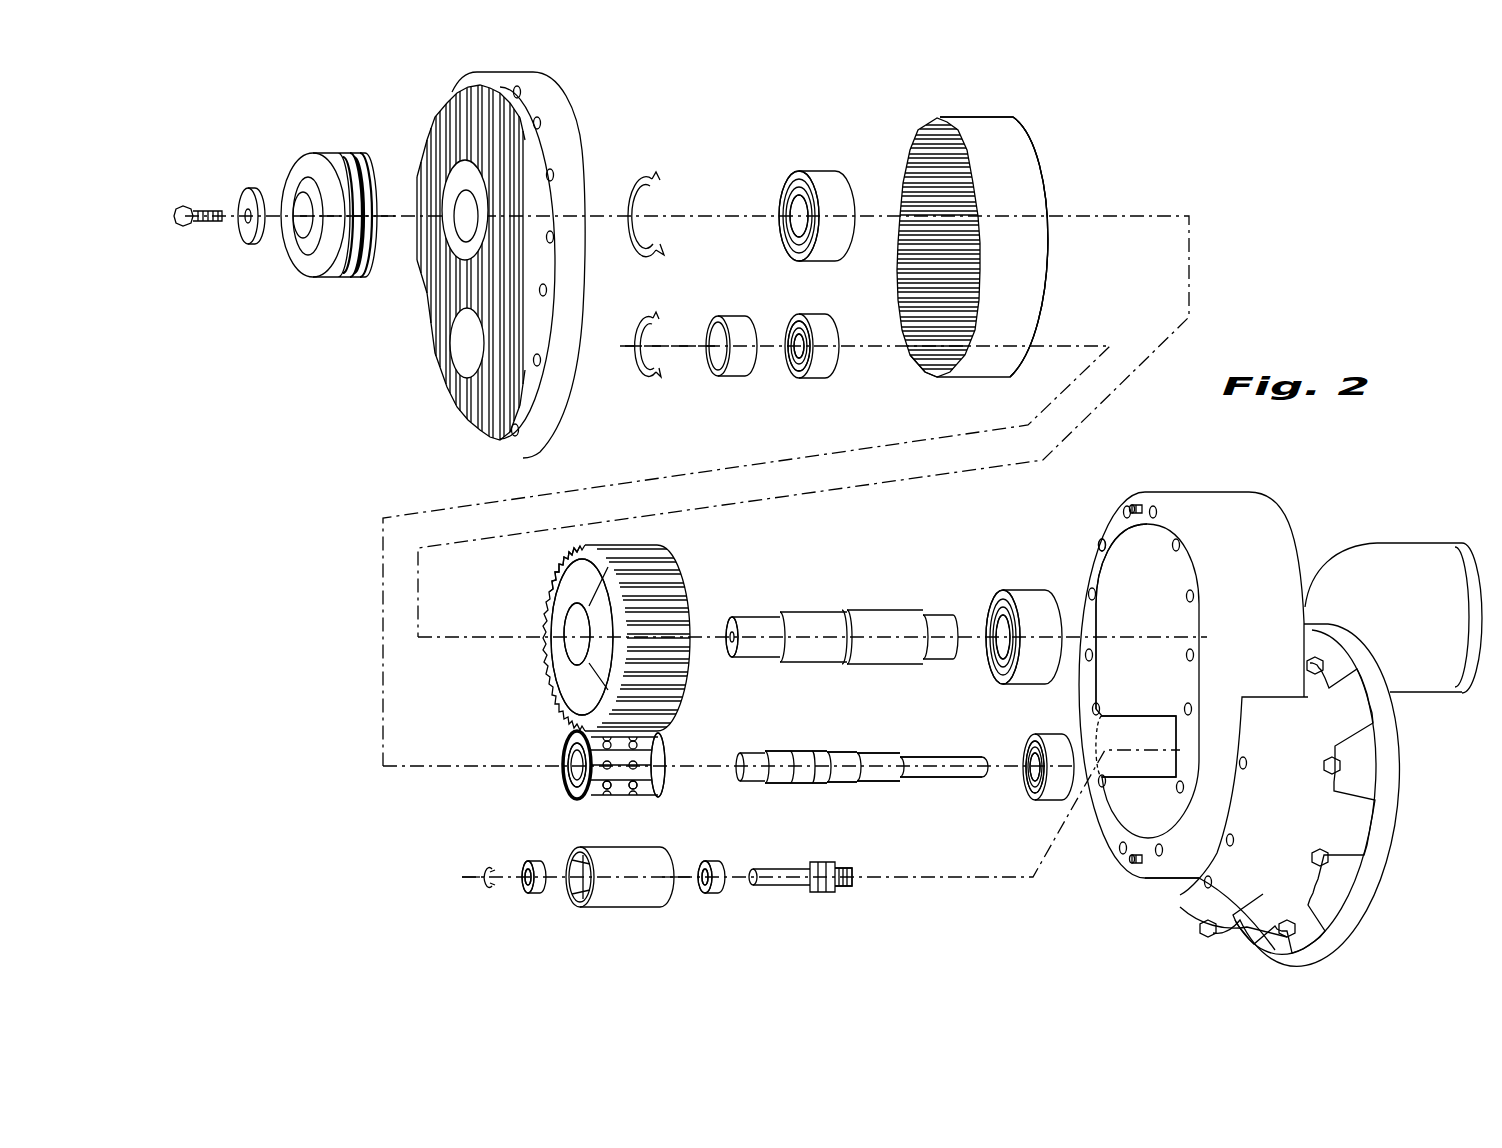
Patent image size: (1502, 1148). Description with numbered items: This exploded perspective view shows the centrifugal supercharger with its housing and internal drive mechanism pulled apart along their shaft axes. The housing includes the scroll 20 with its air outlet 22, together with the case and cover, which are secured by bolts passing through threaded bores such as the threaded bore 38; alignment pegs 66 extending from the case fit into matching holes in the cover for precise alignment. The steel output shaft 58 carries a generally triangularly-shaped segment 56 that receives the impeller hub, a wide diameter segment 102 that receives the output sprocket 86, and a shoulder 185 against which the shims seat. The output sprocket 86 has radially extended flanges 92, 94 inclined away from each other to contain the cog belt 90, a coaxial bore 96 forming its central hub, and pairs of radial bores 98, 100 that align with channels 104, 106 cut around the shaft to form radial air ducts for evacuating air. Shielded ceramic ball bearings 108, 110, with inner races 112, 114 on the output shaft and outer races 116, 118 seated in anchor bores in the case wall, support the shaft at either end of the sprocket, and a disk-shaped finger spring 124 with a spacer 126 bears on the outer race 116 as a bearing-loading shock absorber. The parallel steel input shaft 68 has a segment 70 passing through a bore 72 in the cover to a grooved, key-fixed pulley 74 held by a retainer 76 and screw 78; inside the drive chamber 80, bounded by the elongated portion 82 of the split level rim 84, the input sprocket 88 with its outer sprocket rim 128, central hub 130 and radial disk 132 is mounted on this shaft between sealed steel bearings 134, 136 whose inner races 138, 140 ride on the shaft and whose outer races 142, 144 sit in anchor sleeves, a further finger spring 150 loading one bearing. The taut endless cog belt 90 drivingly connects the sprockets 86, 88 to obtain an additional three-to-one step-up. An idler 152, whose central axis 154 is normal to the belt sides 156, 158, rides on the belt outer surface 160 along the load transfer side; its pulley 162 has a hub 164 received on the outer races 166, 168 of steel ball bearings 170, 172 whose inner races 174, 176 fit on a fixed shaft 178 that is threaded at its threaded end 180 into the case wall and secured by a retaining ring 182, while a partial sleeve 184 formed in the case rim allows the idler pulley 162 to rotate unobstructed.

The scroll 20 is at (1401, 771).
The air outlet 22 is at (1470, 692).
The threaded bore 38 is at (1098, 544).
The triangularly-shaped segment 56 is at (943, 781).
The output shaft 58 is at (885, 782).
The alignment pegs 66 is at (1137, 502).
The input shaft 68 is at (917, 603).
The segment 70 is at (754, 615).
The bore 72 is at (460, 205).
The pulley 74 is at (311, 279).
The retainer 76 is at (250, 246).
The screw 78 is at (187, 227).
The drive chamber 80 is at (1128, 530).
The elongated portion 82 is at (1215, 493).
The split level rim 84 is at (1155, 899).
The output sprocket 86 is at (669, 793).
The input sprocket 88 is at (681, 562).
The cog belt 90 is at (1030, 323).
The flange 92 is at (578, 801).
The flange 94 is at (664, 752).
The coaxial bore 96 is at (566, 776).
The radial bore 98 is at (606, 792).
The radial bore 100 is at (629, 791).
The wide diameter segment 102 is at (808, 784).
The channel 104 is at (795, 781).
The channel 106 is at (830, 784).
The ceramic ball bearing 108 is at (815, 384).
The ceramic ball bearing 110 is at (1040, 803).
The inner race 112 is at (795, 360).
The inner race 114 is at (1024, 792).
The outer race 116 is at (799, 328).
The outer race 118 is at (1024, 744).
The finger spring 124 is at (648, 377).
The spacer 126 is at (716, 378).
The outer sprocket rim 128 is at (549, 575).
The central hub 130 is at (573, 622).
The radial disk 132 is at (578, 687).
The steel bearing 134 is at (832, 263).
The steel bearing 136 is at (1022, 684).
The inner race 138 is at (789, 232).
The inner race 140 is at (997, 656).
The outer race 142 is at (792, 181).
The outer race 144 is at (1003, 592).
The finger spring 150 is at (650, 256).
The idler 152 is at (468, 892).
The central axis 154 is at (674, 882).
The side 156 is at (930, 376).
The side 158 is at (1040, 285).
The outer surface 160 is at (1036, 159).
The pulley 162 is at (645, 906).
The hub 164 is at (576, 902).
The outer race 166 is at (536, 889).
The outer race 168 is at (710, 897).
The ball bearing 170 is at (521, 893).
The ball bearing 172 is at (723, 889).
The inner race 174 is at (527, 864).
The inner race 176 is at (703, 864).
The fixed shaft 178 is at (797, 887).
The threaded end 180 is at (843, 889).
The retaining ring 182 is at (489, 890).
The partial sleeve 184 is at (1115, 778).
The shoulder 185 is at (897, 755).